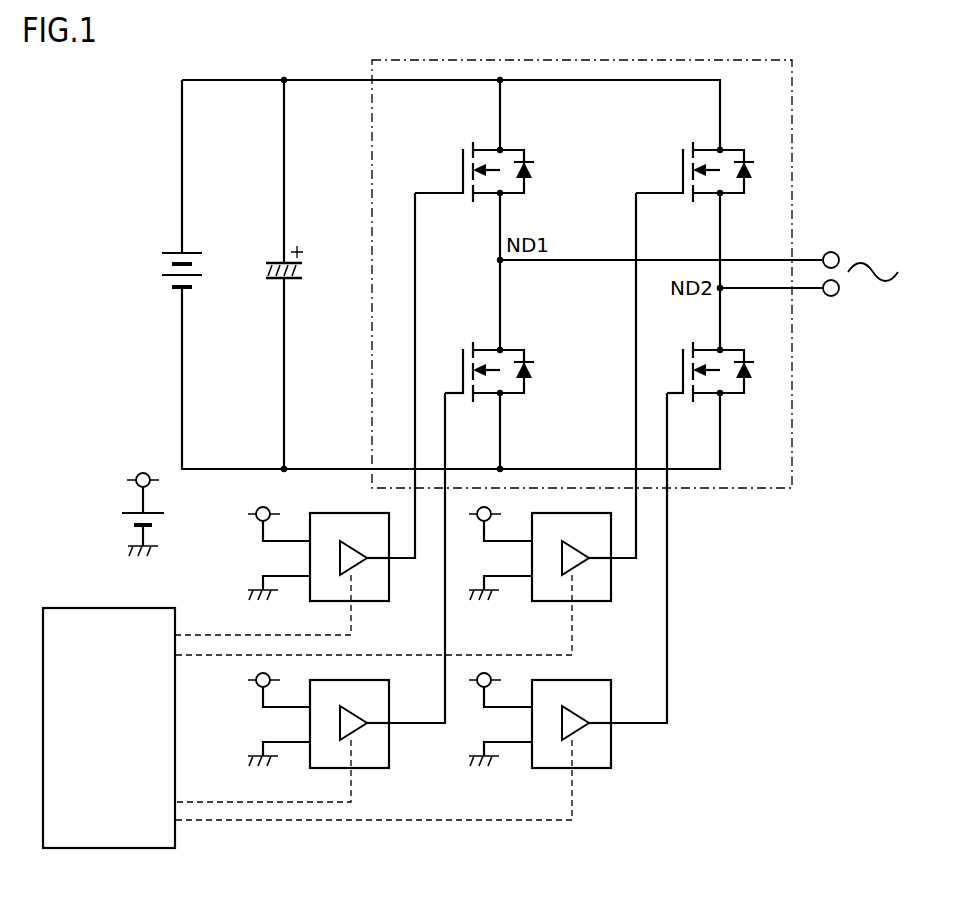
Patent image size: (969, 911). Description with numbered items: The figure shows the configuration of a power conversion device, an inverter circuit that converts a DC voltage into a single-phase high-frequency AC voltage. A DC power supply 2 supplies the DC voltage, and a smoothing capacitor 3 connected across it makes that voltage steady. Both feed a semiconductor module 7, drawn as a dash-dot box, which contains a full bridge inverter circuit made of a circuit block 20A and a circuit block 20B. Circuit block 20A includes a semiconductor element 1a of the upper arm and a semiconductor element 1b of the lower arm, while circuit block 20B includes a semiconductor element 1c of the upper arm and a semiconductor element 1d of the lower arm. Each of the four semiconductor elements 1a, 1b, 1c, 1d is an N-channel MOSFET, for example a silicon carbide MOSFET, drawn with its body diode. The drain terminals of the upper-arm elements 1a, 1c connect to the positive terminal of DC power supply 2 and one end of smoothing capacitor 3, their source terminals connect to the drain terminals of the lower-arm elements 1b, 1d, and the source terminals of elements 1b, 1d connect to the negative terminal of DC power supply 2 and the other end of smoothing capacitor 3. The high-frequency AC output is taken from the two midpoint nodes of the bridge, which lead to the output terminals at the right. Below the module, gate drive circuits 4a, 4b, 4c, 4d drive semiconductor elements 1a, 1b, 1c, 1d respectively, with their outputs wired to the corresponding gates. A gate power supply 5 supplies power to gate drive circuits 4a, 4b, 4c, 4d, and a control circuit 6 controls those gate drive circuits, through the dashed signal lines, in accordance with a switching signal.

The semiconductor element 1a is at (513, 146).
The semiconductor element 1b is at (513, 346).
The semiconductor element 1c is at (733, 146).
The semiconductor element 1d is at (733, 346).
The DC power supply 2 is at (192, 252).
The smoothing capacitor 3 is at (290, 280).
The gate drive circuit 4a is at (389, 590).
The gate drive circuit 4b is at (389, 757).
The gate drive circuit 4c is at (611, 590).
The gate drive circuit 4d is at (611, 757).
The gate power supply 5 is at (144, 472).
The control circuit 6 is at (66, 607).
The semiconductor module 7 is at (750, 490).
The circuit block 20A is at (452, 128).
The circuit block 20B is at (672, 128).